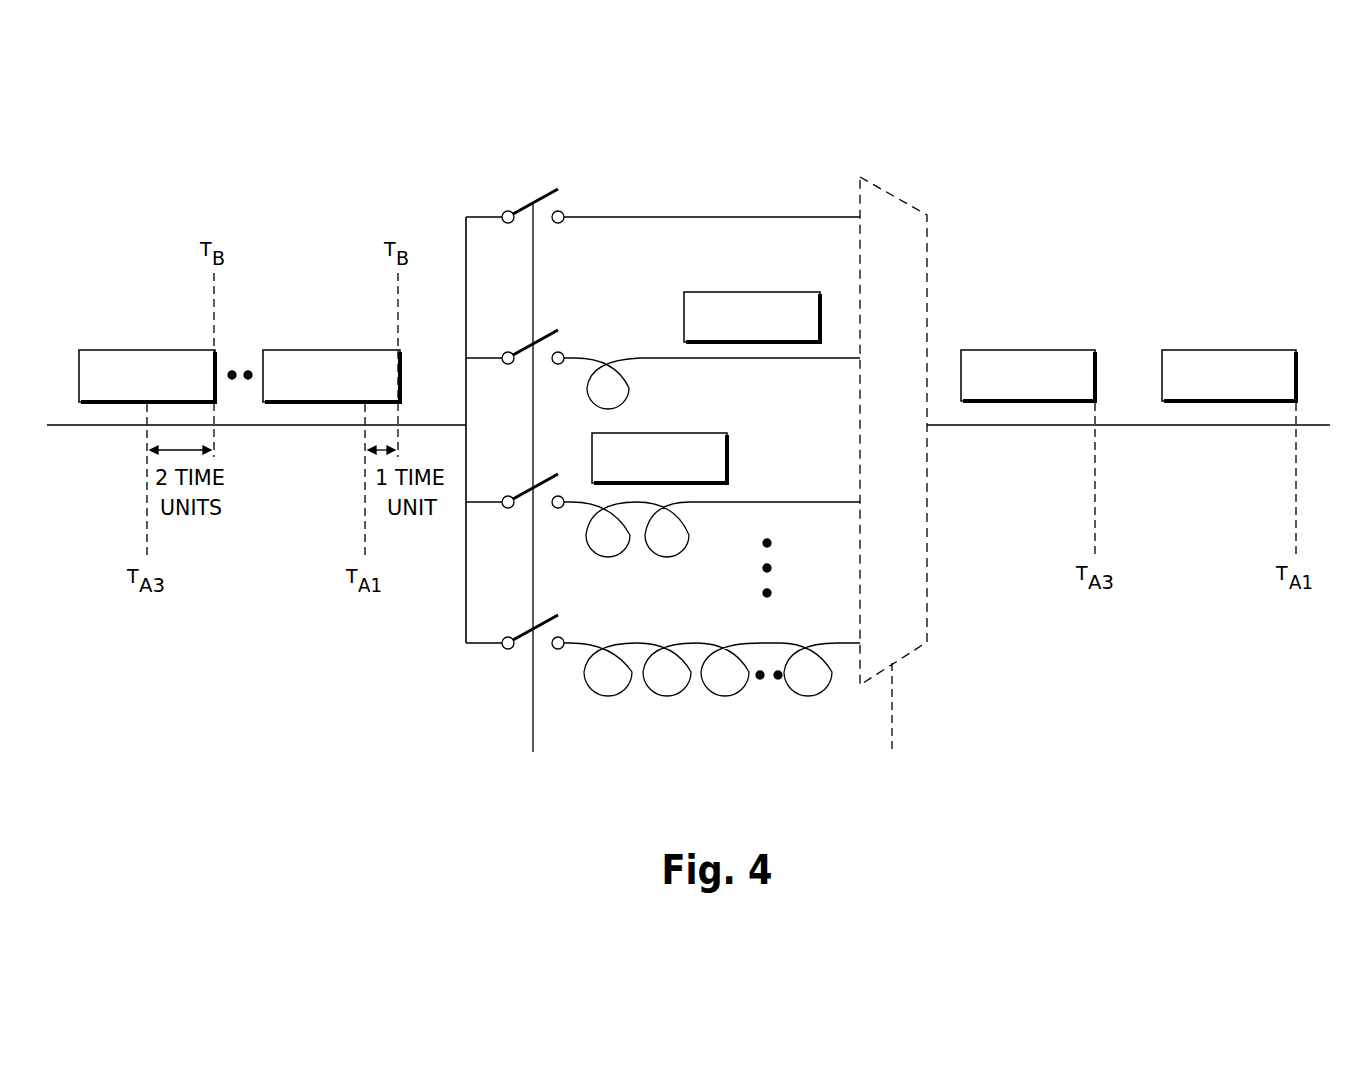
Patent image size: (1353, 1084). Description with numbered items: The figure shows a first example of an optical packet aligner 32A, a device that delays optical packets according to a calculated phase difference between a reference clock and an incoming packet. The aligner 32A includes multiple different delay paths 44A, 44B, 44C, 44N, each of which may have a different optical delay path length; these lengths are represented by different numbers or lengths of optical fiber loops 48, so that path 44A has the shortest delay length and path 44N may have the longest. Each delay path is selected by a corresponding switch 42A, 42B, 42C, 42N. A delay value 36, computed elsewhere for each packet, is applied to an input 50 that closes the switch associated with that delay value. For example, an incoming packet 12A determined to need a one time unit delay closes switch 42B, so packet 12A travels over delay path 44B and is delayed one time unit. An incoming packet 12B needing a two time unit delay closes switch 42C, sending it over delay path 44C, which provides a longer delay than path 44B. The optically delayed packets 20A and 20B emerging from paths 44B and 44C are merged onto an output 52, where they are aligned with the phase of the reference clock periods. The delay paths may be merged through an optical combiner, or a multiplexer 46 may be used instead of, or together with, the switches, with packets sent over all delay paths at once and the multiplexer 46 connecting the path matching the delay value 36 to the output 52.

The packet 12A is at (335, 350).
The packet 12B is at (150, 350).
The optically delayed packet 20A is at (1230, 350).
The optically delayed packet 20B is at (1028, 350).
The optical packet aligner 32A is at (1137, 191).
The delay value 36 is at (712, 798).
The switch 42A is at (549, 185).
The switch 42B is at (549, 327).
The switch 42C is at (549, 471).
The switch 42N is at (549, 612).
The delay path 44A is at (828, 217).
The delay path 44B is at (824, 360).
The delay path 44C is at (828, 502).
The delay path 44N is at (712, 673).
The multiplexer 46 is at (896, 196).
The optical fiber loops 48 is at (667, 697).
The input 50 is at (533, 716).
The output 52 is at (1027, 428).